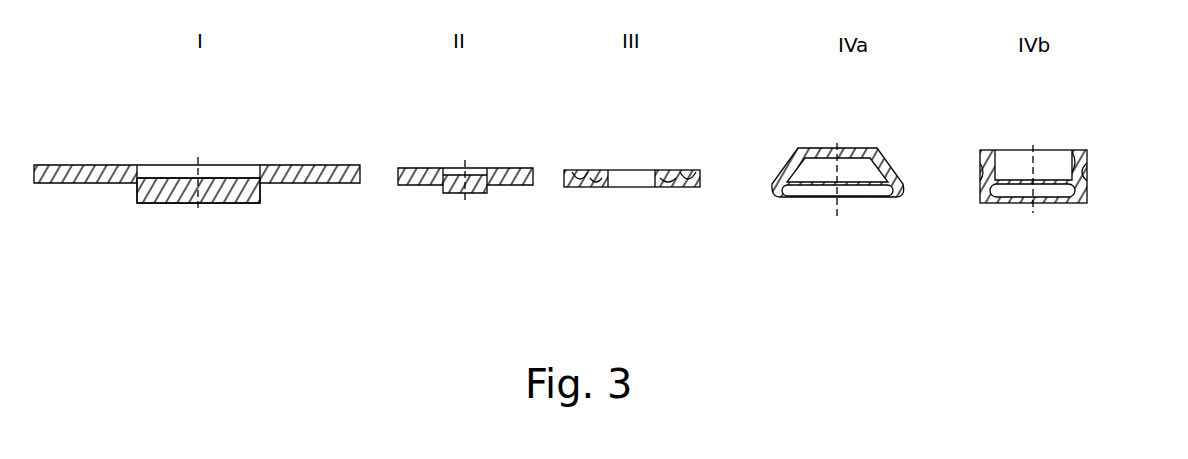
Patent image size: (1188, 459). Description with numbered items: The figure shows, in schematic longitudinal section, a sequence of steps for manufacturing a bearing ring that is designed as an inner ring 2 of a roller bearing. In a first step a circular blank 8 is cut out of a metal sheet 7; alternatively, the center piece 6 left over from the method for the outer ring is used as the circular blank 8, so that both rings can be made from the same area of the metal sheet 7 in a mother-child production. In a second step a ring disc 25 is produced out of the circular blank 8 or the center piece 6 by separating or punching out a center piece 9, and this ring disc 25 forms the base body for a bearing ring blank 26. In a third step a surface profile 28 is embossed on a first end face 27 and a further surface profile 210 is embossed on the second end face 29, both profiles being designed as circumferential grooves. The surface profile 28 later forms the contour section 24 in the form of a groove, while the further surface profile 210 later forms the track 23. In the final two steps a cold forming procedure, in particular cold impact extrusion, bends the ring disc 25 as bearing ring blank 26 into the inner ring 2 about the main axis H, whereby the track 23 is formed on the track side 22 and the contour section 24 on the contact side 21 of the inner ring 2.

The metal sheet 7 is at (78, 183).
The circular blank 8 is at (269, 237).
The center piece 6 is at (228, 200).
The ring disc 25 is at (645, 147).
The bearing ring blank 26 is at (412, 167).
The center piece 9 is at (478, 193).
The second end face 29 is at (567, 168).
The further surface profile 210 is at (673, 168).
The surface profile 28 is at (573, 187).
The first end face 27 is at (667, 189).
The inner ring 2 is at (1053, 169).
The main axis H is at (1033, 148).
The contact side 21 is at (1062, 148).
The track 23 is at (1088, 172).
The track side 22 is at (980, 192).
The contour section 24 is at (1048, 202).